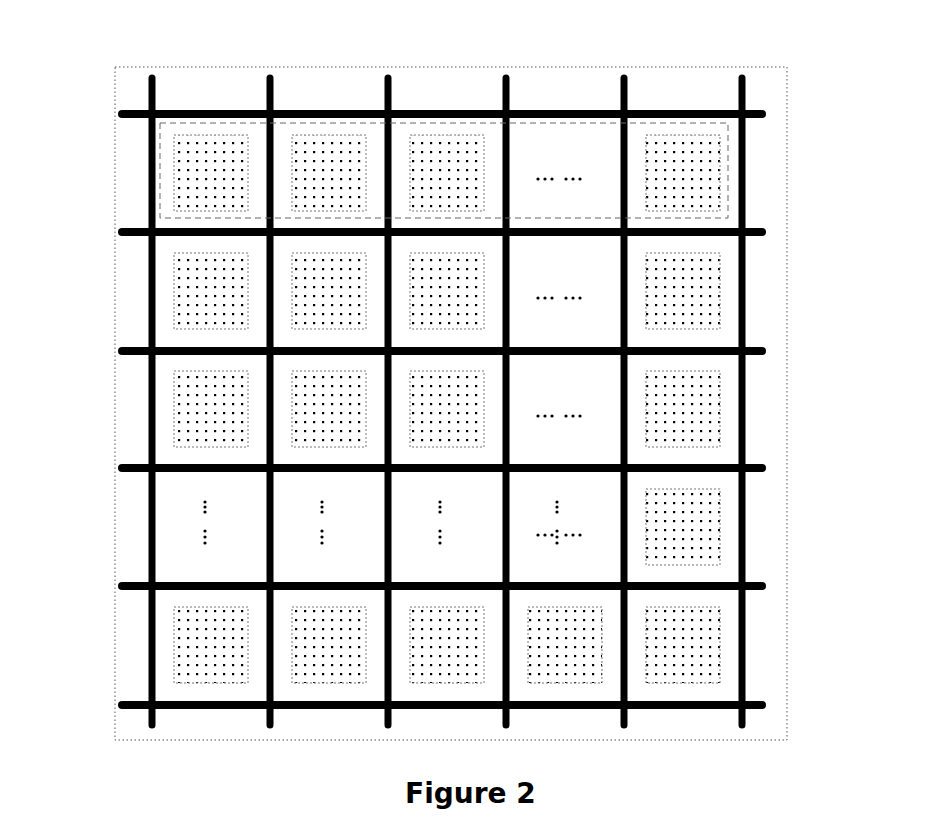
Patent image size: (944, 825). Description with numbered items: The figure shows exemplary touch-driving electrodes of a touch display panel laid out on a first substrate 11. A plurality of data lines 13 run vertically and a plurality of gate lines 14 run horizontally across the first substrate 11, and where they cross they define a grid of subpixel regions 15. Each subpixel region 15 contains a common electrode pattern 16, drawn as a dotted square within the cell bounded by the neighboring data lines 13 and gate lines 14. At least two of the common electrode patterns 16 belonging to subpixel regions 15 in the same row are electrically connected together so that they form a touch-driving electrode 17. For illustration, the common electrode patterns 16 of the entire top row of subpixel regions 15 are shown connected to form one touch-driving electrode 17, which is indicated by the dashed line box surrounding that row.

The first substrate 11 is at (427, 83).
The data lines 13 is at (152, 75).
The gate lines 14 is at (765, 114).
The subpixel regions 15 is at (155, 120).
The common electrode pattern 16 is at (190, 187).
The touch-driving electrode 17 is at (728, 215).